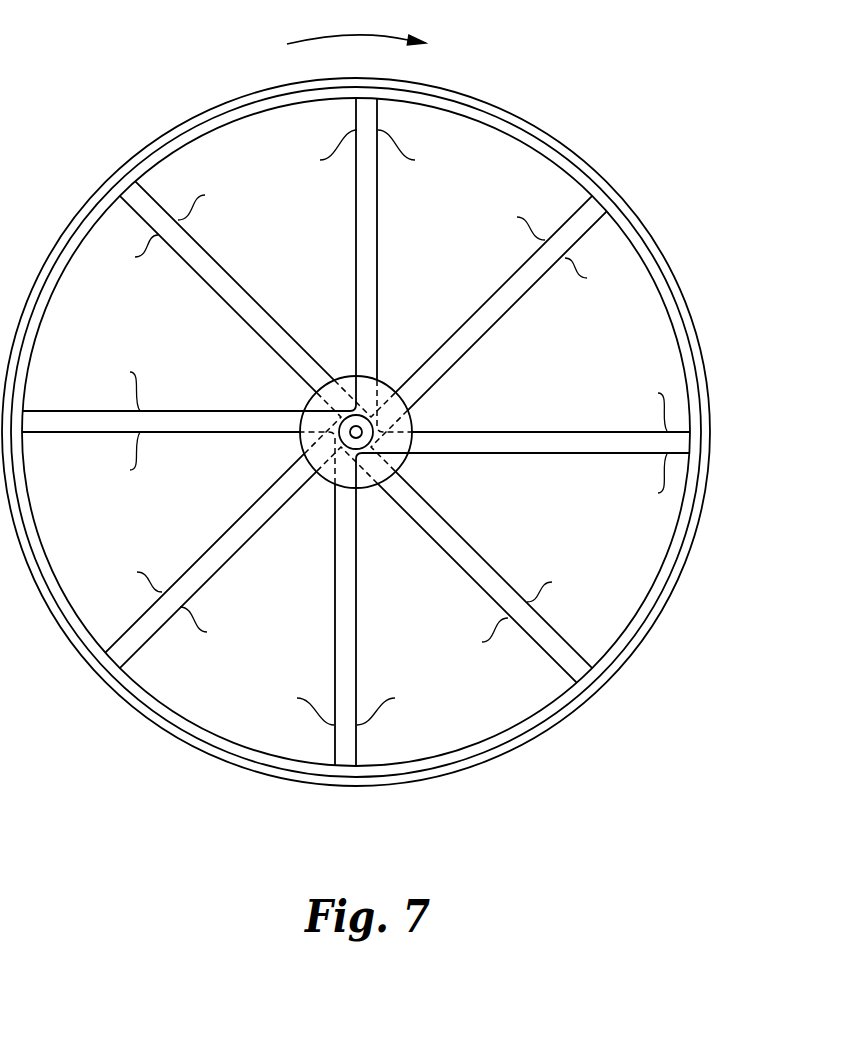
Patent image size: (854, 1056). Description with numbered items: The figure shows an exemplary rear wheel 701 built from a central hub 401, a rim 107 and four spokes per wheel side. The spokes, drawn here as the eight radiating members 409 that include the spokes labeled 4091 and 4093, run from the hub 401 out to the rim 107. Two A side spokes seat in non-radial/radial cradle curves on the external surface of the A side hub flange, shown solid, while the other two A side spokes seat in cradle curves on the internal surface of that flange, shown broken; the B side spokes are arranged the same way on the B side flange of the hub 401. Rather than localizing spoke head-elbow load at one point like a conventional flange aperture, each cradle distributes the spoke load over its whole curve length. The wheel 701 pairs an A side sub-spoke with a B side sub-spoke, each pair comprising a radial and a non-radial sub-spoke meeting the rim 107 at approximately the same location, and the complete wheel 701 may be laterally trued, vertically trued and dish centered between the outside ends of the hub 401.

The rear wheel 701 is at (142, 100).
The rim 107 is at (680, 277).
The spokes 409 is at (356, 432).
The spoke 4091 is at (357, 628).
The spoke 4093 is at (378, 273).
The hub 401 is at (323, 480).